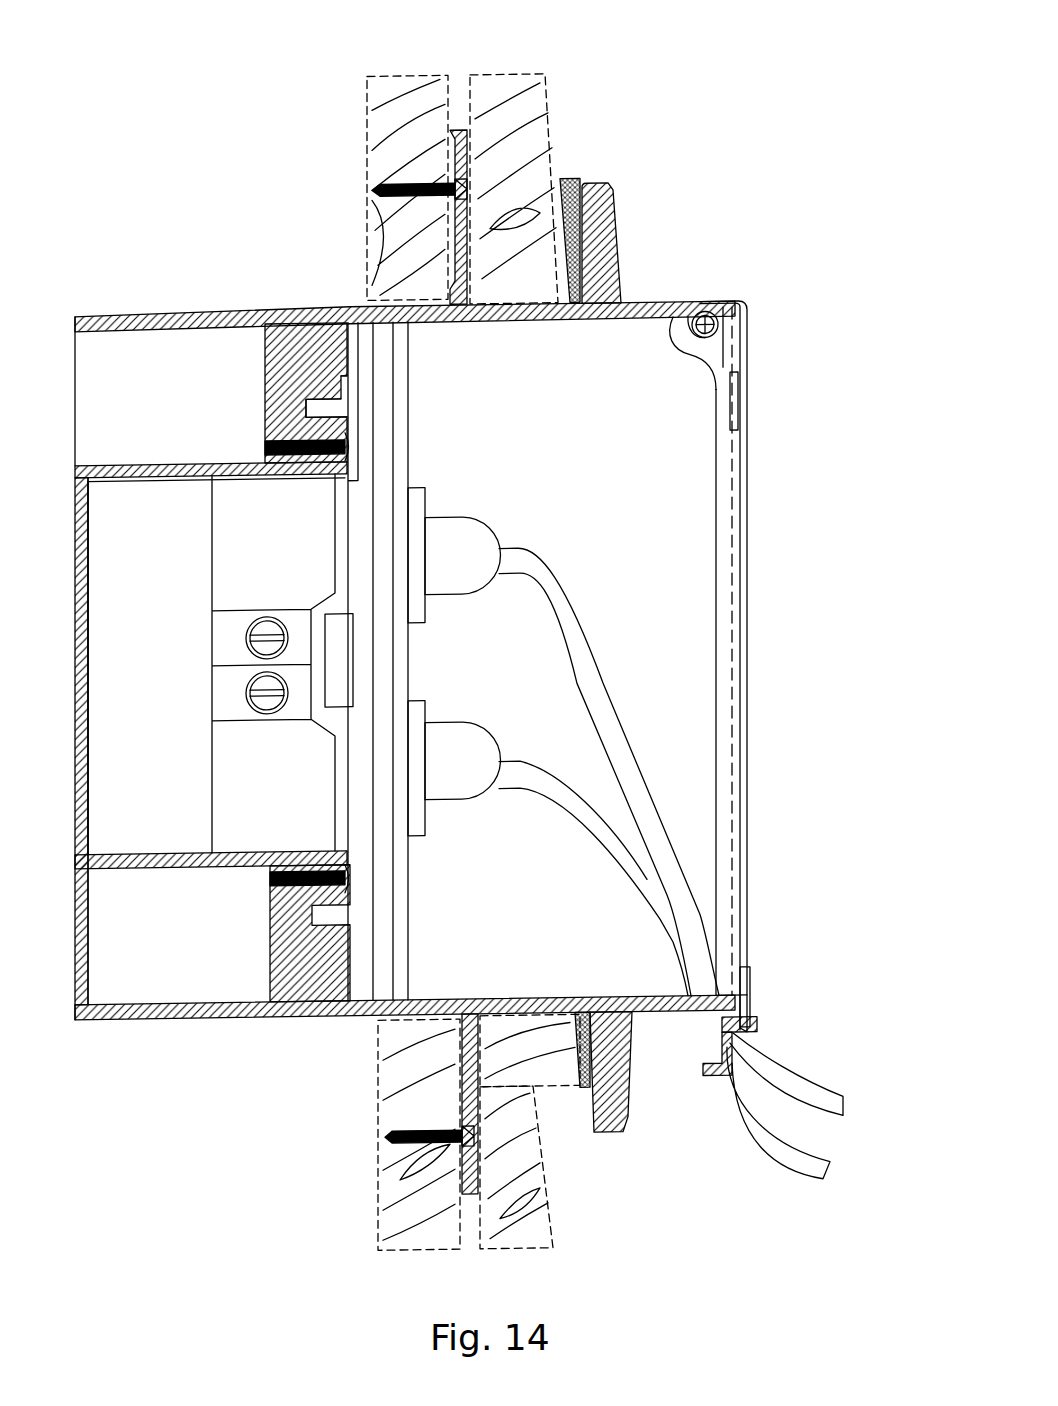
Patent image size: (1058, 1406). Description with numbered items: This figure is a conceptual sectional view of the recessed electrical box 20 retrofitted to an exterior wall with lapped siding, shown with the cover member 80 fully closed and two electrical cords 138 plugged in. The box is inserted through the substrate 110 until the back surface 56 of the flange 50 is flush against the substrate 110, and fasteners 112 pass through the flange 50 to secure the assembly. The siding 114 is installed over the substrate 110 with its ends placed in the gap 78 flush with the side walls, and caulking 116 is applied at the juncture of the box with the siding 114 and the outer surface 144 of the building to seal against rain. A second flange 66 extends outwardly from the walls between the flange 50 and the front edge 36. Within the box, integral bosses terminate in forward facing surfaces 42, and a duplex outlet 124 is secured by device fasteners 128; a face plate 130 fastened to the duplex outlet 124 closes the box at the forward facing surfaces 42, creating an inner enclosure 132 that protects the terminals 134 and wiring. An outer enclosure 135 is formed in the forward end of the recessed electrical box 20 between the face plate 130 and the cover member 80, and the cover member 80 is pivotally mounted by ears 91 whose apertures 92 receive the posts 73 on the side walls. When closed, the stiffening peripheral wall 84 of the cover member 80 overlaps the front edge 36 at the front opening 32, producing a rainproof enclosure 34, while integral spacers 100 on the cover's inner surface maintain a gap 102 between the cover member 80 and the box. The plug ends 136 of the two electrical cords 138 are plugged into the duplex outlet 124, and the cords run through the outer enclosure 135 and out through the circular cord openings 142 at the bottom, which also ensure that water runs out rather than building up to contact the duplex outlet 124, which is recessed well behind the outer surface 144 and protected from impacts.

The recessed electrical box 20 is at (192, 252).
The front opening 32 is at (708, 494).
The enclosure 34 is at (455, 354).
The front edge 36 is at (740, 600).
The forward facing surfaces 42 is at (342, 388).
The flange 50 is at (458, 131).
The back surface 56 is at (450, 146).
The second flange 66 is at (617, 197).
The posts 73 is at (716, 318).
The gap 78 is at (548, 1100).
The cover member 80 is at (756, 675).
The stiffening peripheral wall 84 is at (728, 542).
The ears 91 is at (674, 333).
The apertures 92 is at (700, 346).
The integral spacers 100 is at (738, 398).
The gap 102 is at (740, 797).
The substrate 110 is at (385, 98).
The fasteners 112 is at (470, 185).
The siding 114 is at (540, 72).
The caulking 116 is at (575, 181).
The duplex outlet 124 is at (220, 664).
The device fasteners 128 is at (345, 446).
The face plate 130 is at (400, 946).
The inner enclosure 132 is at (130, 667).
The terminals 134 is at (265, 691).
The outer enclosure 135 is at (609, 771).
The plug ends 136 is at (463, 658).
The electrical cords 138 is at (747, 1105).
The circular cord openings 142 is at (700, 1040).
The outer surface 144 is at (551, 110).